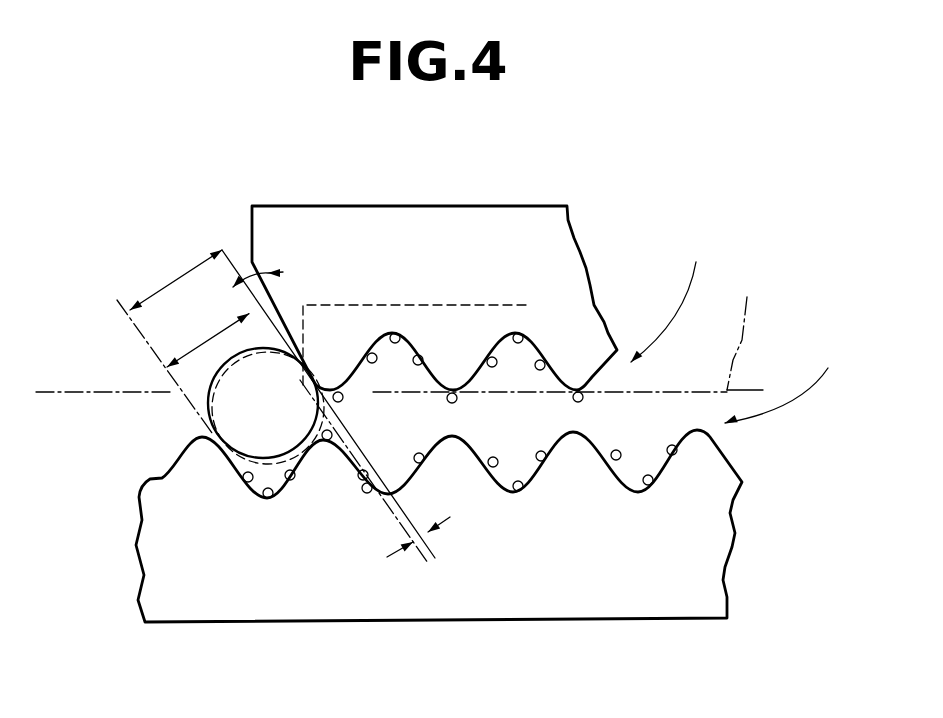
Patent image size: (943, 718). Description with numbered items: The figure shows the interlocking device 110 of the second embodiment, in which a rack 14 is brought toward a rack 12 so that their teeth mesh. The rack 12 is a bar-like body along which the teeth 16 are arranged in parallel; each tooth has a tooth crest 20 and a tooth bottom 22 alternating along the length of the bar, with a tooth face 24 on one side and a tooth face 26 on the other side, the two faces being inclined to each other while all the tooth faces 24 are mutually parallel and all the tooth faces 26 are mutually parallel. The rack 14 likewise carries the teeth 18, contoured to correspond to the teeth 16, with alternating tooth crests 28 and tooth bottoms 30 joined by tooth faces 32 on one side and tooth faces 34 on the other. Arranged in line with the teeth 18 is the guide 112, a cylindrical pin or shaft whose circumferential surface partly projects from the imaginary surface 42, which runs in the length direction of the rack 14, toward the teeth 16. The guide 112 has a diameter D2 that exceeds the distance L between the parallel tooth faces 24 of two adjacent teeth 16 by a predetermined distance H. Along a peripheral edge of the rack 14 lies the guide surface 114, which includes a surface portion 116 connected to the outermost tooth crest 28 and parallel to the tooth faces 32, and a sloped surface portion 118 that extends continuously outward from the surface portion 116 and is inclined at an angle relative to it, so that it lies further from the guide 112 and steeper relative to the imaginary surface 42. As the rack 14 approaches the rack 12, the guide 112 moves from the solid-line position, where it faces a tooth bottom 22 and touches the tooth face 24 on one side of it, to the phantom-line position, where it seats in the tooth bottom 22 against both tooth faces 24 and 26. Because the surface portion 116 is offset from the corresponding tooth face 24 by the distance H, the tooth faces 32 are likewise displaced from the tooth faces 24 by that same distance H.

The rack 12 is at (707, 583).
The rack 14 is at (508, 220).
The teeth 16 is at (785, 378).
The teeth 18 is at (677, 295).
The tooth crest 20 is at (195, 436).
The tooth bottom 22 is at (275, 498).
The tooth face 24 is at (243, 493).
The tooth face 26 is at (160, 478).
The tooth crest 28 is at (345, 385).
The tooth bottom 30 is at (393, 328).
The tooth face 32 is at (418, 335).
The tooth face 34 is at (396, 328).
The imaginary surface 42 is at (746, 328).
The interlocking device 110 is at (606, 224).
The guide 112 is at (195, 378).
The guide surface 114 is at (303, 303).
The surface portion 116 is at (270, 300).
The sloped surface portion 118 is at (250, 255).
The diameter D2 is at (166, 288).
The distance L is at (208, 338).
The predetermined distance H is at (422, 552).